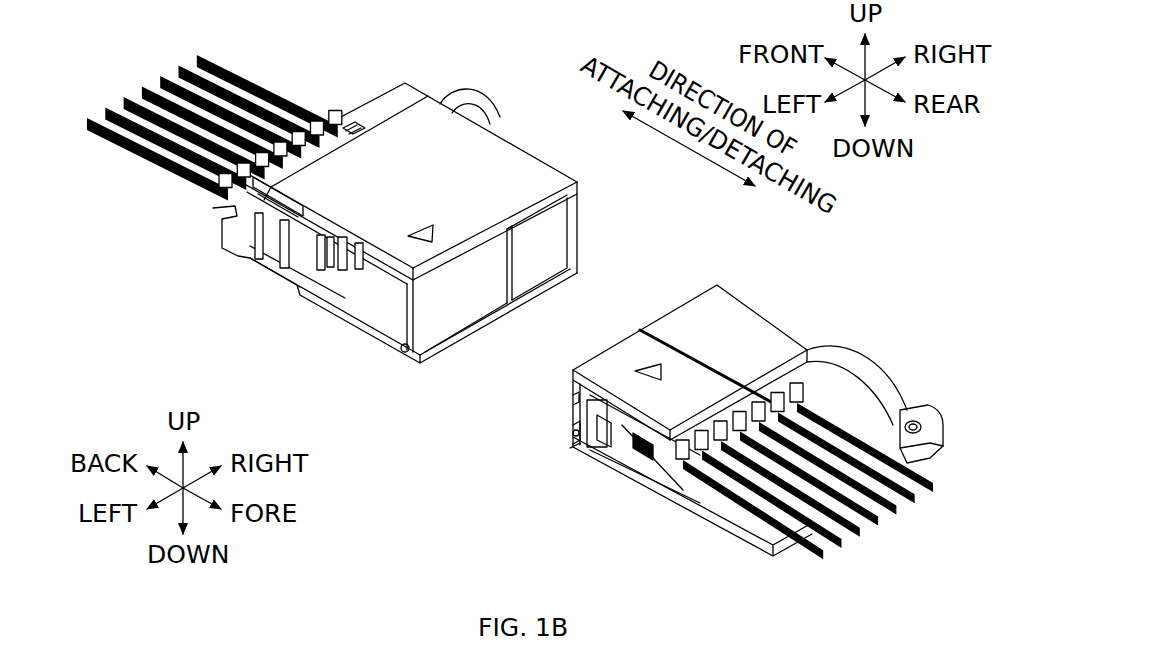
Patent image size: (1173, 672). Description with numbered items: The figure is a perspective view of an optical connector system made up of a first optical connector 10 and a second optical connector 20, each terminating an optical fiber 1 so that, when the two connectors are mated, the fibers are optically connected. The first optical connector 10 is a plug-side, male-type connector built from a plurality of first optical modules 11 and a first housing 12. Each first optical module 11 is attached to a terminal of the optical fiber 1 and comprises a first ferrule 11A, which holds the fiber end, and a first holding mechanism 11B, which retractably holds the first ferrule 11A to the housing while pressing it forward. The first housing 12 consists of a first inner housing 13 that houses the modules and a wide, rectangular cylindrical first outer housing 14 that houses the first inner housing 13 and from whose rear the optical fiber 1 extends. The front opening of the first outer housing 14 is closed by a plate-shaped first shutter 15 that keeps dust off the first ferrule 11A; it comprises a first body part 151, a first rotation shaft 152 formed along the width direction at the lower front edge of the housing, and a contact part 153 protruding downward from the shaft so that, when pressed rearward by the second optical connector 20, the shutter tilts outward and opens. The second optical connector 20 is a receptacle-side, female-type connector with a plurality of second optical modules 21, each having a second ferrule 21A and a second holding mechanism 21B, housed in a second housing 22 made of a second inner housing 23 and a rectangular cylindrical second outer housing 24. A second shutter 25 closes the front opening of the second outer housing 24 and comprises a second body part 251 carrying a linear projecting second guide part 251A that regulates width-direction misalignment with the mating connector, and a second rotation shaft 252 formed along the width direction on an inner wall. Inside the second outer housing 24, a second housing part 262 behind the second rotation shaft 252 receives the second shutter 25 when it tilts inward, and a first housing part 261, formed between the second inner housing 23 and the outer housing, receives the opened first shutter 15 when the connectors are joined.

The optical fiber 1 is at (107, 143).
The first optical connector 10 is at (855, 289).
The first optical module 11 is at (756, 438).
The first ferrule 11A is at (597, 420).
The first holding mechanism 11B is at (807, 388).
The first housing 12 is at (772, 430).
The first inner housing 13 is at (807, 368).
The first outer housing 14 is at (752, 312).
The first shutter 15 is at (512, 454).
The first body part 151 is at (572, 400).
The first rotation shaft 152 is at (573, 433).
The contact part 153 is at (573, 452).
The second optical connector 20 is at (357, 82).
The second optical module 21 is at (282, 328).
The second ferrule 21A is at (310, 273).
The second holding mechanism 21B is at (276, 257).
The second housing 22 is at (419, 256).
The second inner housing 23 is at (273, 203).
The second outer housing 24 is at (419, 278).
The second shutter 25 is at (429, 311).
The second body part 251 is at (517, 284).
The second guide part 251A is at (558, 277).
The second rotation shaft 252 is at (421, 366).
The first housing part 261 is at (233, 255).
The second housing part 262 is at (385, 335).